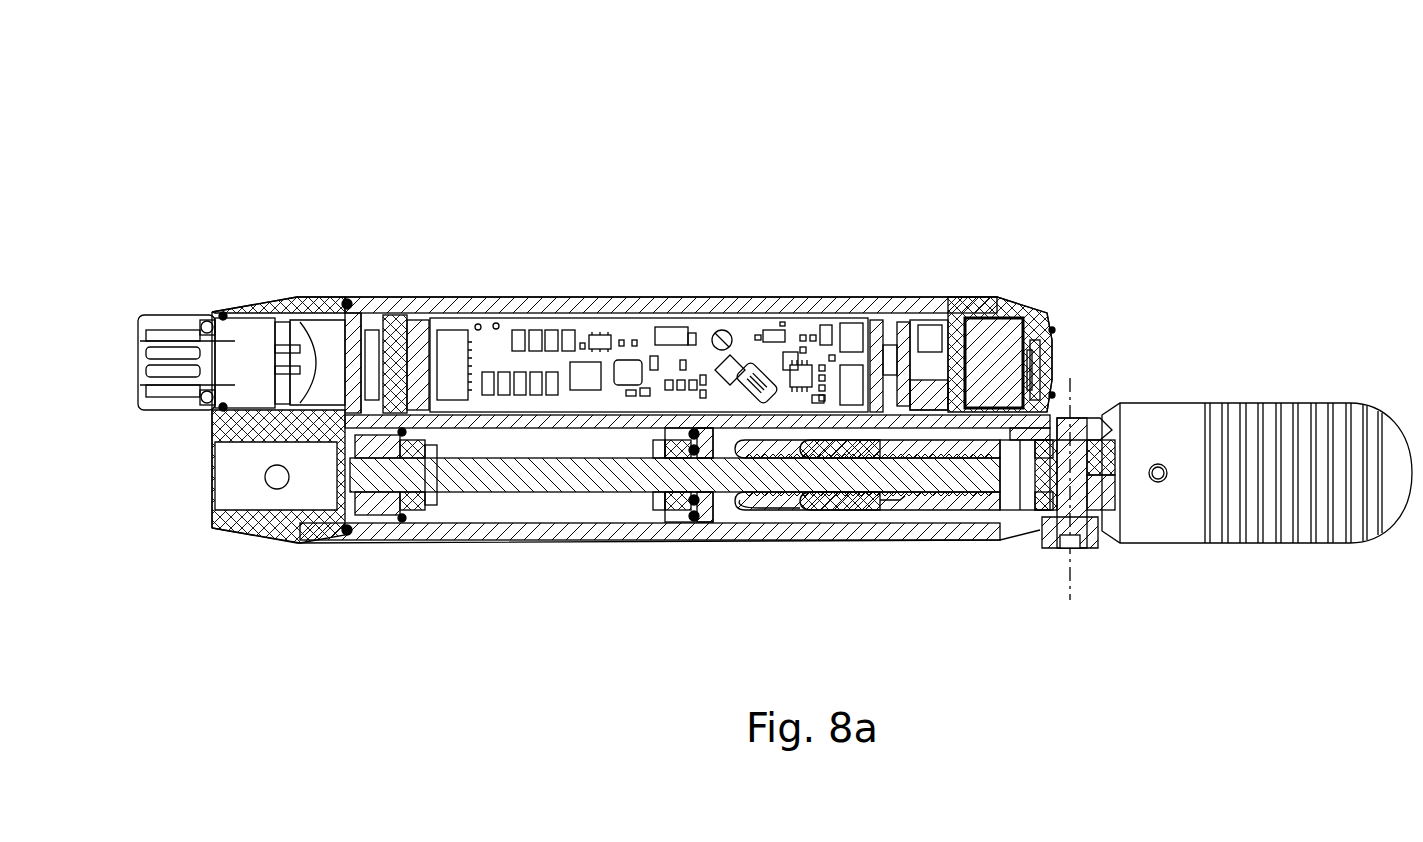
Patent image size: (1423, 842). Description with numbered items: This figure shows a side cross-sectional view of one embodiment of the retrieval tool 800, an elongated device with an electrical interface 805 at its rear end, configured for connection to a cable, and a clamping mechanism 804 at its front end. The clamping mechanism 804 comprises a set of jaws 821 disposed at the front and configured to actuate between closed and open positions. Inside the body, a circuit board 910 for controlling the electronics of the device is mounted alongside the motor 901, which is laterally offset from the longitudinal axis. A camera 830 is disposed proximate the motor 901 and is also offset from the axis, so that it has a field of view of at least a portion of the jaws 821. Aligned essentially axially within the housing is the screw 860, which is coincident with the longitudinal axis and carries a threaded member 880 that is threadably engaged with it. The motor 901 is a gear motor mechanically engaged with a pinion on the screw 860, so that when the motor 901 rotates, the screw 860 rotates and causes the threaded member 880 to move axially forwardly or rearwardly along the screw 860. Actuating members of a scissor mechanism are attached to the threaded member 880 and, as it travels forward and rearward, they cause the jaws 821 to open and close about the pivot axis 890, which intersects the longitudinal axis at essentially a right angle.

The retrieval tool 800 is at (884, 114).
The electrical interface 805 is at (137, 348).
The circuit board 910 is at (507, 330).
The motor 901 is at (900, 307).
The camera 830 is at (1025, 306).
The clamping mechanism 804 is at (1155, 403).
The jaws 821 is at (1385, 428).
The screw 860 is at (775, 492).
The threaded member 880 is at (865, 500).
The pivot axis 890 is at (1072, 580).